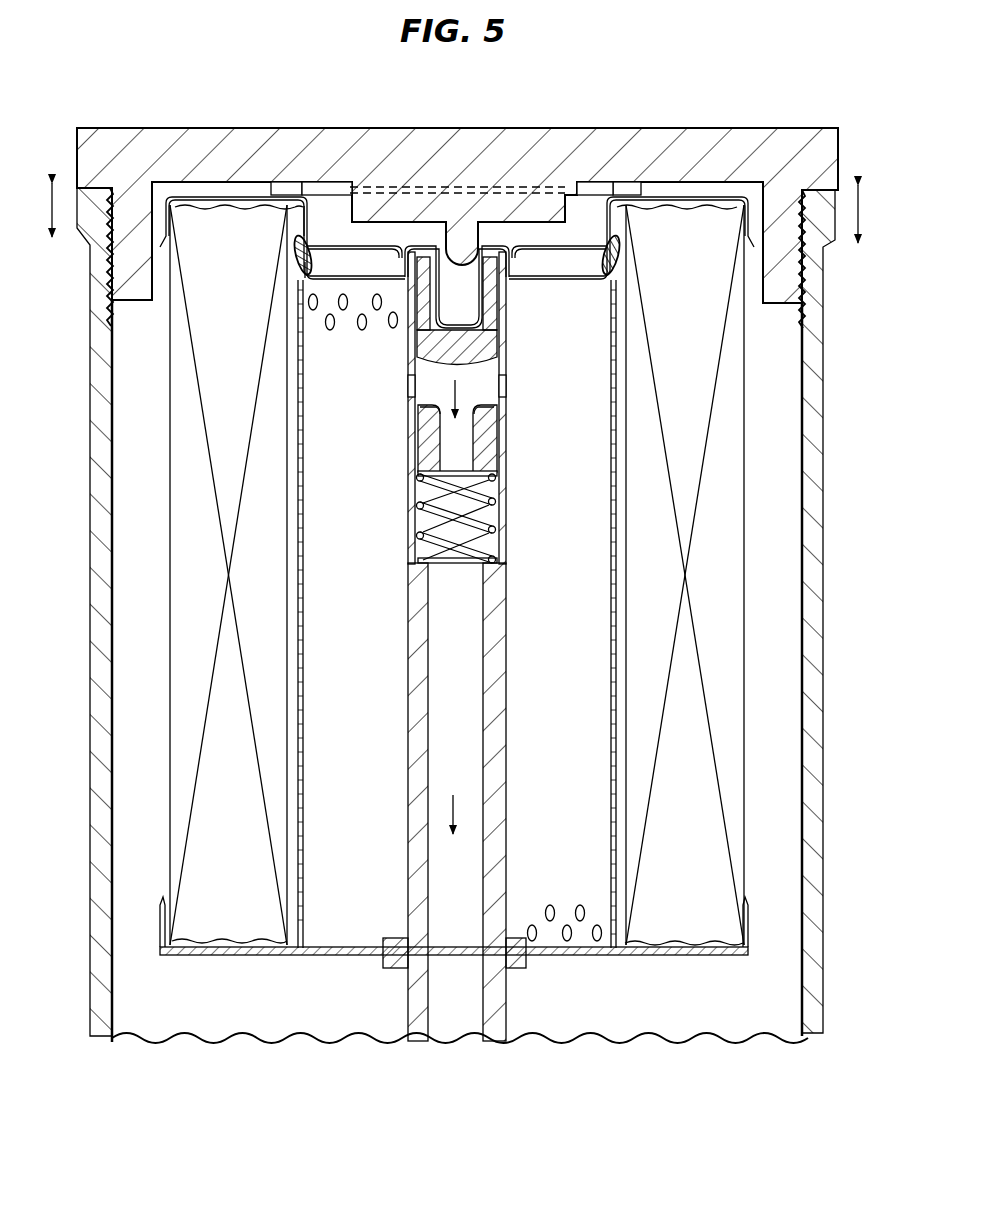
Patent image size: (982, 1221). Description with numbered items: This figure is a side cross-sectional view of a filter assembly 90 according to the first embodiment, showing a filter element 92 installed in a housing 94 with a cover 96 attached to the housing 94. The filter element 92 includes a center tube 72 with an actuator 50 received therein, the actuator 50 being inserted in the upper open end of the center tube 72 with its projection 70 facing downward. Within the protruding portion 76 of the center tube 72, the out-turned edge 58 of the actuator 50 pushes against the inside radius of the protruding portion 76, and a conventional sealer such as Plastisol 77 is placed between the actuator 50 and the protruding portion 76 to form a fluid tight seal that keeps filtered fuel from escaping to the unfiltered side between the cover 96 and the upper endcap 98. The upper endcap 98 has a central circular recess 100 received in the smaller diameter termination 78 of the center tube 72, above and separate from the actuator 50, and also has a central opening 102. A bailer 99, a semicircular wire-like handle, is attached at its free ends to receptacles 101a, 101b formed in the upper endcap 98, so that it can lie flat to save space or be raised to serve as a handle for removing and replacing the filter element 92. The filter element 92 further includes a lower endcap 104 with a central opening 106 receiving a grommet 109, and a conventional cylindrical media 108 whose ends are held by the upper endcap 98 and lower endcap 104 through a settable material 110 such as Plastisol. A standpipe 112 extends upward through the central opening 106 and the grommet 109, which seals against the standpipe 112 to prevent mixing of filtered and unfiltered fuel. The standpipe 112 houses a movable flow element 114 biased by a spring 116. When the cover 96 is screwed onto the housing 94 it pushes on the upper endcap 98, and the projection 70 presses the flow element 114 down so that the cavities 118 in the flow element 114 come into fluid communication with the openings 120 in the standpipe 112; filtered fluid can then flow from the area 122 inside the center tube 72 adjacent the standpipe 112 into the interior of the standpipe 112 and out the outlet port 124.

The filter assembly 90 is at (127, 86).
The filter element 92 is at (768, 632).
The housing 94 is at (818, 440).
The cover 96 is at (438, 157).
The upper endcap 98 is at (658, 198).
The bailer 99 is at (336, 188).
The central circular recess 100 is at (541, 247).
The receptacle 101a is at (284, 190).
The receptacle 101b is at (618, 190).
The central opening 102 is at (510, 244).
The lower endcap 104 is at (680, 958).
The central opening 106 is at (531, 960).
The cylindrical media 108 is at (265, 600).
The grommet 109 is at (388, 970).
The settable material 110 is at (713, 210).
The standpipe 112 is at (501, 751).
The movable flow element 114 is at (490, 447).
The spring 116 is at (490, 510).
The cavities 118 is at (420, 421).
The openings 120 is at (408, 386).
The area 122 is at (572, 608).
The outlet port 124 is at (455, 843).
The actuator 50 is at (457, 221).
The out-turned edge 58 is at (300, 247).
The projection 70 is at (416, 344).
The center tube 72 is at (305, 506).
The protruding portion 76 is at (300, 266).
The Plastisol 77 is at (308, 250).
The termination 78 is at (302, 222).